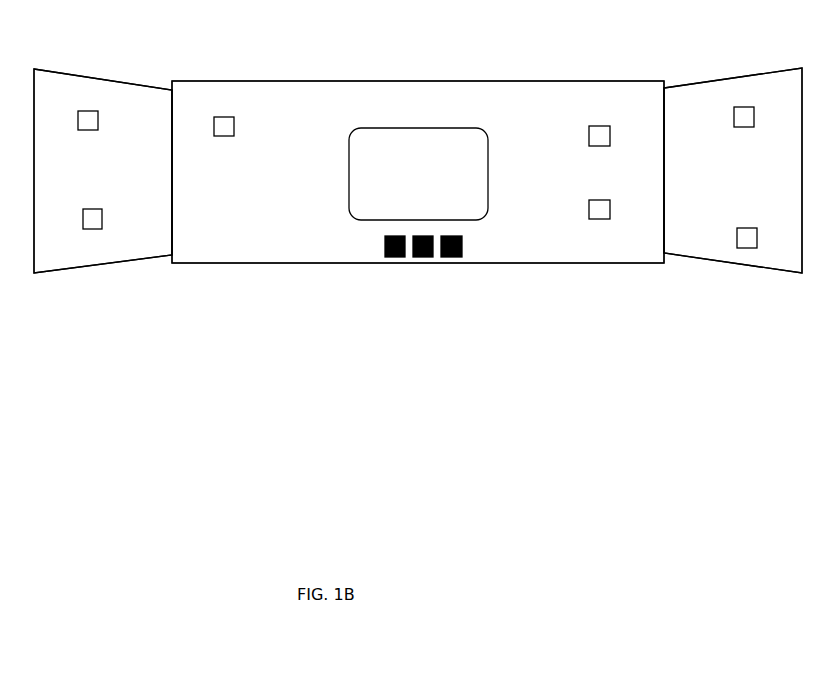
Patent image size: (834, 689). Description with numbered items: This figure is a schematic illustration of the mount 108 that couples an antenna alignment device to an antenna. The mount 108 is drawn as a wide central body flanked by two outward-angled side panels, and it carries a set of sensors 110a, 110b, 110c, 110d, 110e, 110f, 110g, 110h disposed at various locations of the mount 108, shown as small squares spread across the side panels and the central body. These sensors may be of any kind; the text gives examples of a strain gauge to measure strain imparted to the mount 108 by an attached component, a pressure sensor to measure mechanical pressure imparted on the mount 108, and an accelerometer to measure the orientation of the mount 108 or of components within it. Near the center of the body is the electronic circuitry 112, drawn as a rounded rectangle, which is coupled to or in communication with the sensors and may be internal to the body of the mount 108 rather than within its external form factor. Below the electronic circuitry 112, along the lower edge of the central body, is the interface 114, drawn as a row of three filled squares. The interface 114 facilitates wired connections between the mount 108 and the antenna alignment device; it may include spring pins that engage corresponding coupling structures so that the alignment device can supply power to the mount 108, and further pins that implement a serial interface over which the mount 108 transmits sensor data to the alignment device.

The mount 108 is at (382, 541).
The sensor 110a is at (88, 111).
The sensor 110b is at (92, 229).
The sensor 110c is at (228, 120).
The sensor 110d is at (230, 211).
The sensor 110e is at (598, 126).
The sensor 110f is at (608, 217).
The sensor 110g is at (743, 107).
The sensor 110h is at (747, 248).
The electronic circuitry 112 is at (446, 167).
The interface 114 is at (423, 257).